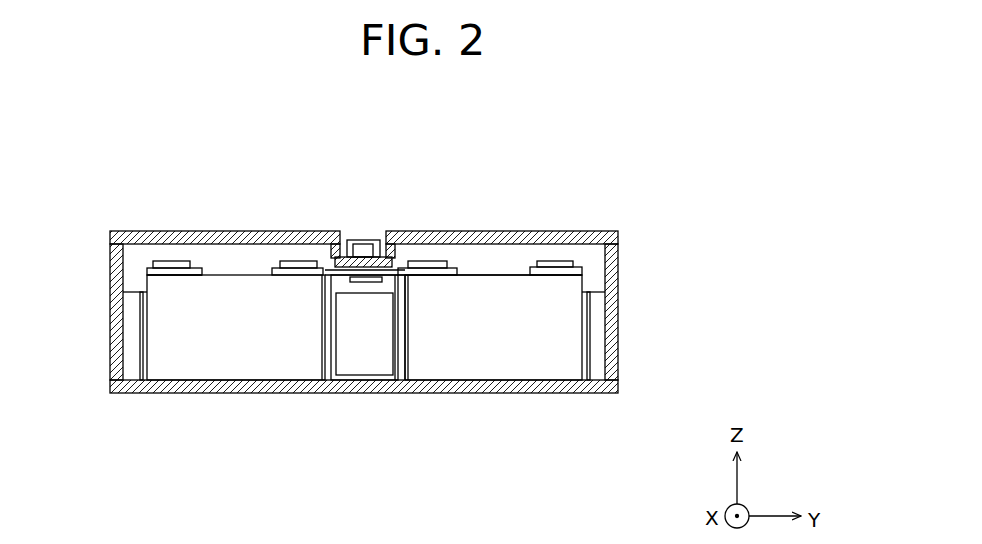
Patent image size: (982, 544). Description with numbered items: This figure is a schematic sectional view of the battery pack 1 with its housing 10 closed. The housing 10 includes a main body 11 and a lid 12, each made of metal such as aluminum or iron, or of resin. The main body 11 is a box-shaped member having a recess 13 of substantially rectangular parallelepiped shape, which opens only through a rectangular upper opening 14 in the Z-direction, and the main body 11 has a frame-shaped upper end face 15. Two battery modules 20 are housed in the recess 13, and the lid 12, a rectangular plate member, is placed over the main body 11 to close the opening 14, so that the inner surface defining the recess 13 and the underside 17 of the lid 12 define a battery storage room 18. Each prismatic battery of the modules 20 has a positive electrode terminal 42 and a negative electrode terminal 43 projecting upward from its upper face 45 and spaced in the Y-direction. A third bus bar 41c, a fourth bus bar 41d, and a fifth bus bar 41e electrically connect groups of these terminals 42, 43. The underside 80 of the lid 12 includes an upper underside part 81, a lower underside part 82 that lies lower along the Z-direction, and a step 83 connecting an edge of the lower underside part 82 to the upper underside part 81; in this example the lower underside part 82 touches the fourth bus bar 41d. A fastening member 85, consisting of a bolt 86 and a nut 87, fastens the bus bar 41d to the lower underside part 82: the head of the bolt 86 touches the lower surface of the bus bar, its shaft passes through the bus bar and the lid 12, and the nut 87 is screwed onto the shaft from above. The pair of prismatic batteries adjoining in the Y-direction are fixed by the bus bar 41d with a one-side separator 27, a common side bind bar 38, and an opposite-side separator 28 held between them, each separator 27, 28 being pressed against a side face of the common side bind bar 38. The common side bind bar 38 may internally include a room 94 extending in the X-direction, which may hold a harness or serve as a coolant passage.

The battery pack 1 is at (360, 200).
The housing 10 is at (452, 220).
The main body 11 is at (619, 276).
The lid 12 is at (520, 262).
The recess 13 is at (147, 266).
The upper opening 14 is at (609, 233).
The upper end face 15 is at (112, 231).
The underside of lid 17 is at (276, 277).
The battery storage room 18 is at (155, 262).
The battery module 20 is at (239, 266).
The one-side separator 27 is at (313, 277).
The opposite-side separator 28 is at (407, 345).
The common side bind bar 38 is at (360, 283).
The third bus bar 41c is at (166, 262).
The fourth bus bar 41d is at (408, 278).
The fifth bus bar 41e is at (583, 268).
The positive electrode terminal 42 is at (200, 262).
The negative electrode terminal 43 is at (290, 262).
The upper face 45 is at (492, 260).
The underside of lid 80 is at (517, 280).
The upper underside part 81 is at (203, 277).
The lower underside part 82 is at (330, 290).
The step 83 is at (305, 277).
The fastening member 85 is at (371, 237).
The bolt 86 is at (395, 293).
The nut 87 is at (350, 240).
The room 94 is at (340, 355).